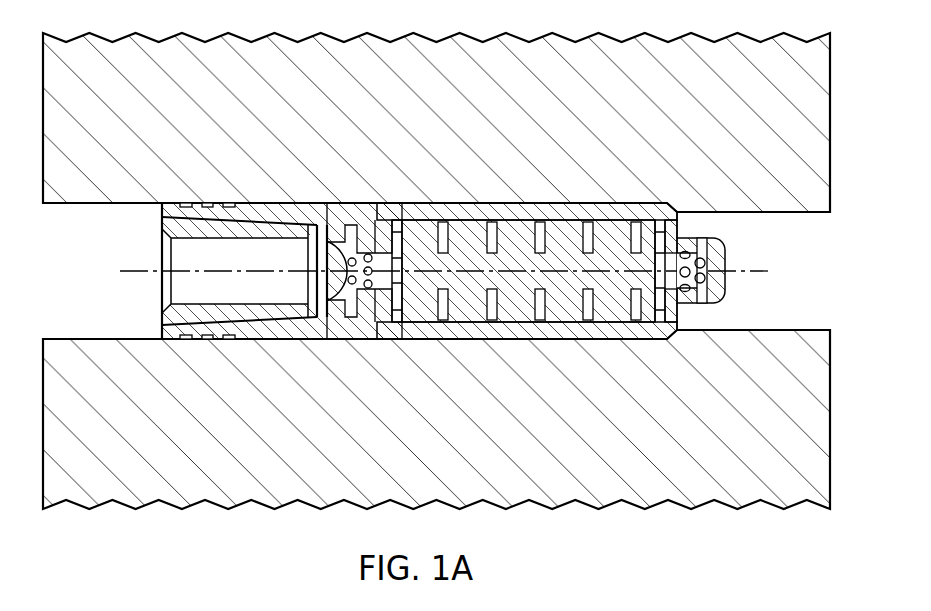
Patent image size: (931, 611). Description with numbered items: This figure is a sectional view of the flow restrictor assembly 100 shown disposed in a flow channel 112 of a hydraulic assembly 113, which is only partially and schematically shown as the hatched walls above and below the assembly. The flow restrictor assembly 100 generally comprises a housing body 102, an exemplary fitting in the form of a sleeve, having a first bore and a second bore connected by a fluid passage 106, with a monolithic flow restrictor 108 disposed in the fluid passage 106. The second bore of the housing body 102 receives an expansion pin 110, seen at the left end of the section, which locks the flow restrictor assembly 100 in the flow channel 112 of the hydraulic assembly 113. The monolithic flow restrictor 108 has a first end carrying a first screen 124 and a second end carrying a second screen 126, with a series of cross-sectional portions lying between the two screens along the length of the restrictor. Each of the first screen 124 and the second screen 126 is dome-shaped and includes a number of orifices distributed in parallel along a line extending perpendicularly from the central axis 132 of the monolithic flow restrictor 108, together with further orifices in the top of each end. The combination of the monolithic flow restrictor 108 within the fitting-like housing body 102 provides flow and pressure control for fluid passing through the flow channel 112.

The flow restrictor assembly 100 is at (465, 245).
The housing body 102 is at (390, 203).
The fluid passage 106 is at (474, 220).
The monolithic flow restrictor 108 is at (542, 236).
The expansion pin 110 is at (277, 322).
The flow channel 112 is at (811, 280).
The hydraulic assembly 113 is at (829, 197).
The first screen 124 is at (723, 306).
The second screen 126 is at (357, 303).
The central axis 132 is at (646, 272).